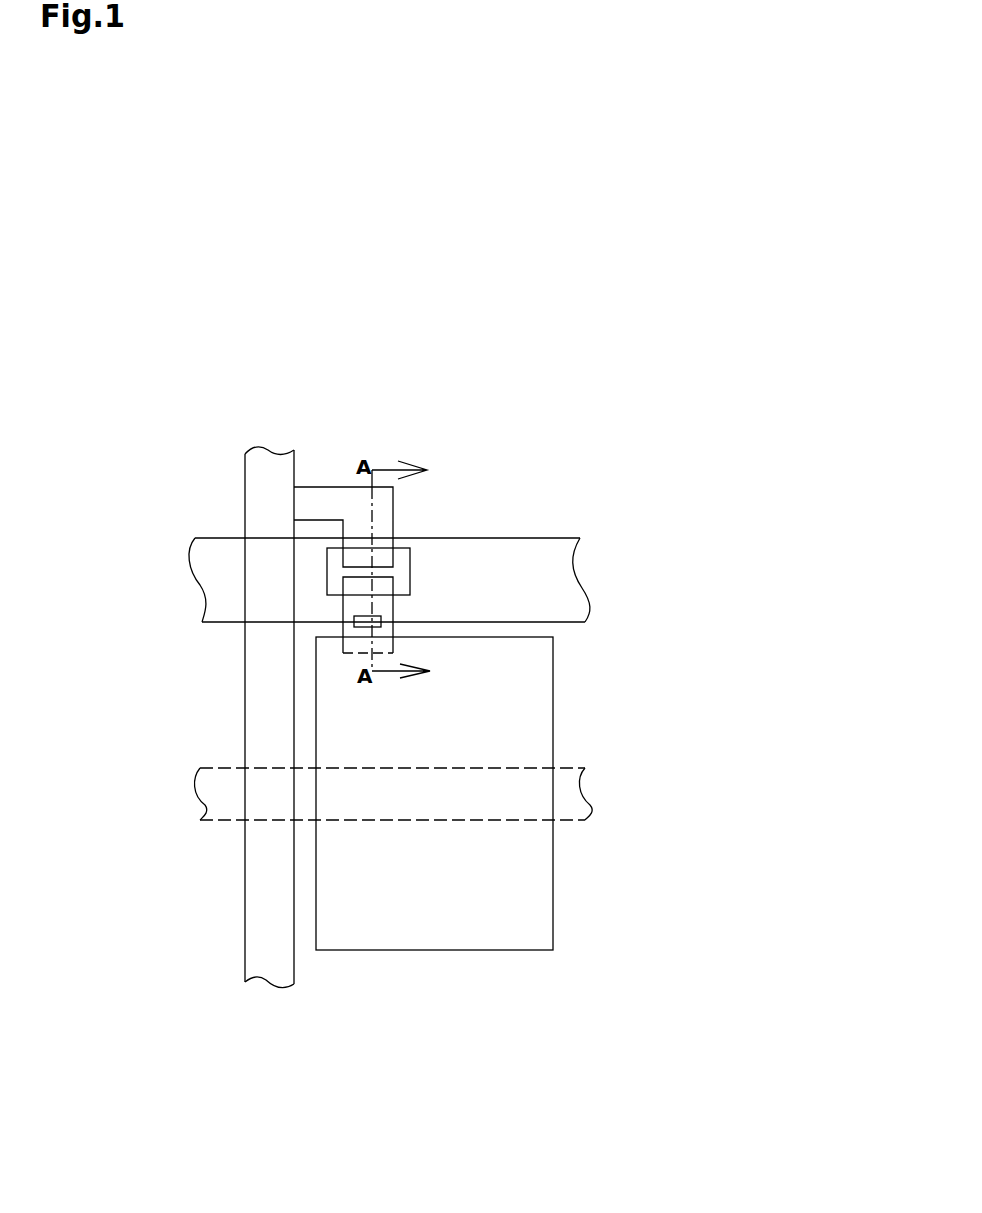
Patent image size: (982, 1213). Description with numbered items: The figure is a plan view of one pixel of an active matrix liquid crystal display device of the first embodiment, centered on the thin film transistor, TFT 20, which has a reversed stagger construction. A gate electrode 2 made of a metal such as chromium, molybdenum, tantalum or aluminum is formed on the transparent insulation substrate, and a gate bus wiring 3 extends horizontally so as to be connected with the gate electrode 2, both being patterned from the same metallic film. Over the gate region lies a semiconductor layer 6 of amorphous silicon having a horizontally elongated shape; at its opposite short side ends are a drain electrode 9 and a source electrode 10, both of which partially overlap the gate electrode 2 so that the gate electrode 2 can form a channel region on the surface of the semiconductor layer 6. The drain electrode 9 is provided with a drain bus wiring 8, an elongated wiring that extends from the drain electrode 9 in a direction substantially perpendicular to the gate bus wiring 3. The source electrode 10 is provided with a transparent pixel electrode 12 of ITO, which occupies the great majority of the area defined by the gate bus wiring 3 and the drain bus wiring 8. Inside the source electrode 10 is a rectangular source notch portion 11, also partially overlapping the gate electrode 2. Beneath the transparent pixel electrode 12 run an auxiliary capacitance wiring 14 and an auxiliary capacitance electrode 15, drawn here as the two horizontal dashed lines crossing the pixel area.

The gate electrode 2 is at (307, 594).
The gate bus wiring 3 is at (575, 593).
The semiconductor layer 6 is at (327, 570).
The drain bus wiring 8 is at (263, 893).
The drain electrode 9 is at (355, 525).
The source electrode 10 is at (355, 632).
The source notch portion 11 is at (382, 622).
The transparent pixel electrode 12 is at (540, 724).
The auxiliary capacitance wiring 14 is at (563, 797).
The auxiliary capacitance electrode 15 is at (458, 792).
The TFT 20 is at (427, 572).